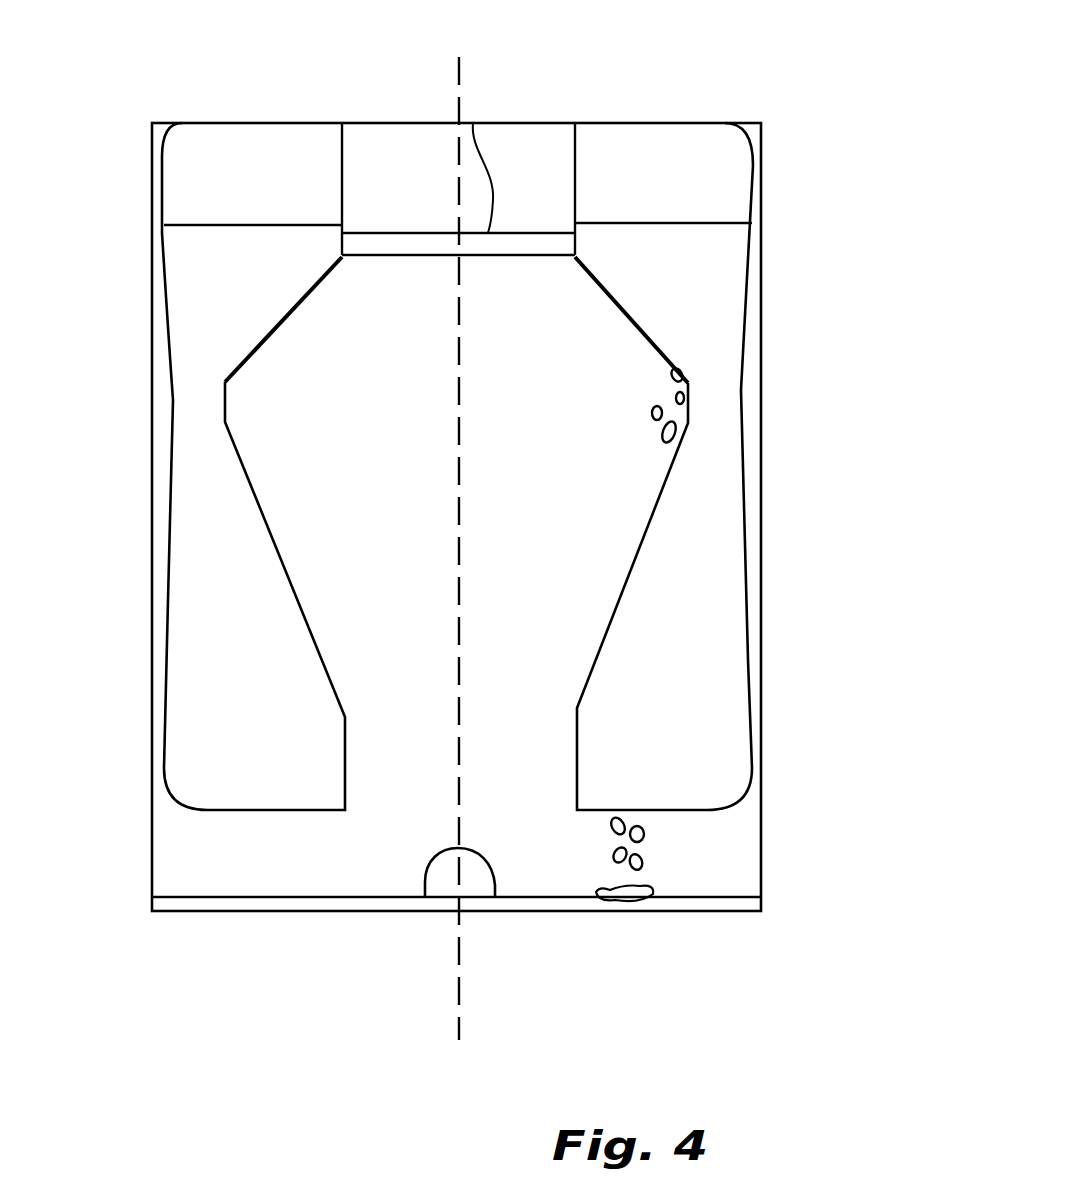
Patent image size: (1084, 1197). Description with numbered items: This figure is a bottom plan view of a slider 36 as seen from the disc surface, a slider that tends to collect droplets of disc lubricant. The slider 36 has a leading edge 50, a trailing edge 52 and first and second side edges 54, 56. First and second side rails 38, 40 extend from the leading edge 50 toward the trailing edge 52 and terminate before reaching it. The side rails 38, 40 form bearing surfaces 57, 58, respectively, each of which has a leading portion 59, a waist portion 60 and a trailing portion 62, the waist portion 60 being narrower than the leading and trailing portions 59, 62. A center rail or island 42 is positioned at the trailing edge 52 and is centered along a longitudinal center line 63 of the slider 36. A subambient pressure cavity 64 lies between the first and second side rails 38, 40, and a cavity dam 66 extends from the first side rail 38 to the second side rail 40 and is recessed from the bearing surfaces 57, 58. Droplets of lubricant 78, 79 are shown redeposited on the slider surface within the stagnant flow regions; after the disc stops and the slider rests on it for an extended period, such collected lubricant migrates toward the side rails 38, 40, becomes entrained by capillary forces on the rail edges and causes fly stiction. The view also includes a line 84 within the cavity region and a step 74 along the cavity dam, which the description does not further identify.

The slider 36 is at (655, 86).
The first side rail 38 is at (691, 819).
The second side rail 40 is at (203, 814).
The center rail 42 is at (440, 905).
The leading edge 50 is at (272, 122).
The trailing edge 52 is at (252, 895).
The first side edge 54 is at (762, 457).
The second side edge 56 is at (152, 537).
The bearing surface 57 is at (694, 537).
The bearing surface 58 is at (196, 492).
The leading portion 59 is at (722, 270).
The waist portion 60 is at (725, 401).
The trailing portion 62 is at (710, 620).
The longitudinal center line 63 is at (462, 982).
The subambient pressure cavity 64 is at (477, 468).
The cavity dam 66 is at (358, 265).
The cavity dam 74 is at (449, 243).
The droplets of lubricant 78 is at (597, 848).
The droplets of lubricant 79 is at (641, 413).
The taper line 84 is at (473, 123).